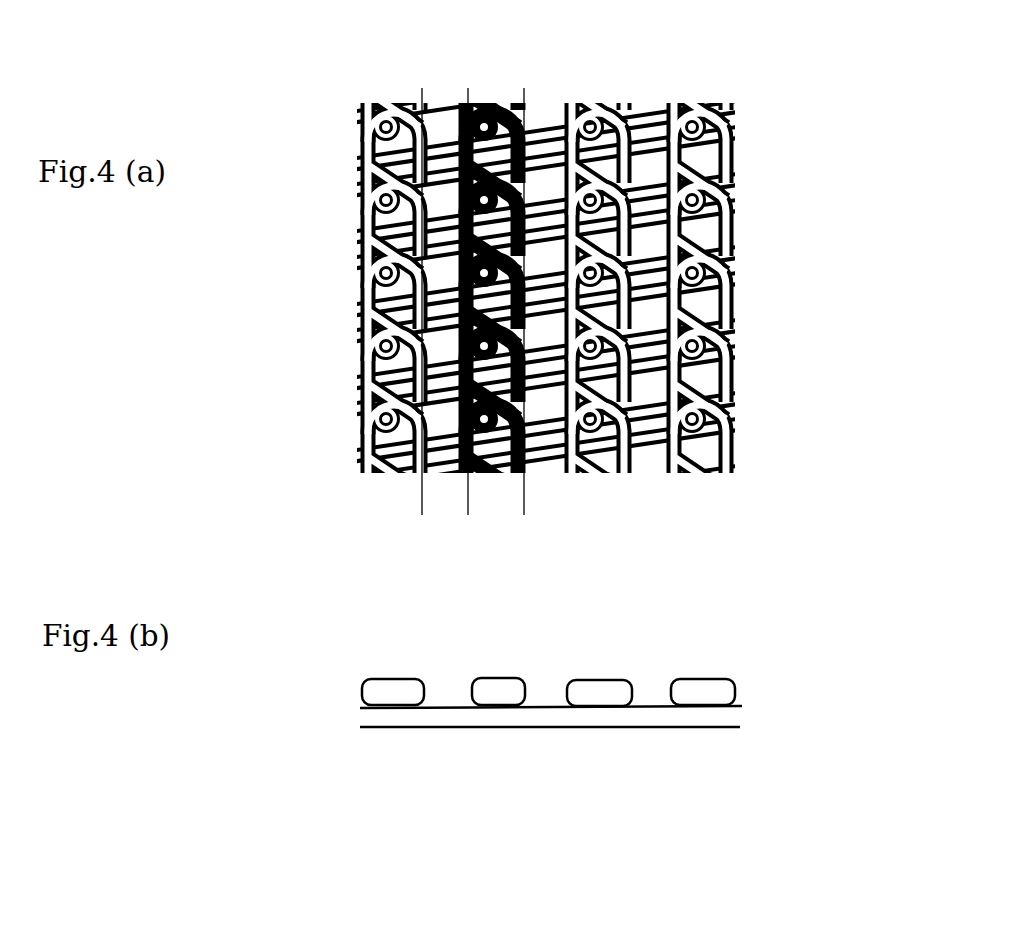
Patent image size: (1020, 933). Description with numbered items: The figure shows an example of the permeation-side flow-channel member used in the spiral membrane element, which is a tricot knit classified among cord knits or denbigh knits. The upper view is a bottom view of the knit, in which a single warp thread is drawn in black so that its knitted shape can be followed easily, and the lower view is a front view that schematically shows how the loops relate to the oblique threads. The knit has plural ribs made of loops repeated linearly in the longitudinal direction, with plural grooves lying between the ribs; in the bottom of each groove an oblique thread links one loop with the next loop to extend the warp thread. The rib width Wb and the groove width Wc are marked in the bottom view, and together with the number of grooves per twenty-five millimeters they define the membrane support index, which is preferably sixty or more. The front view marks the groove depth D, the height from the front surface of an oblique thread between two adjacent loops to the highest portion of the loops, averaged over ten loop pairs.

The groove depth D is at (545, 706).
The rib width Wb is at (524, 502).
The groove width Wc is at (387, 502).